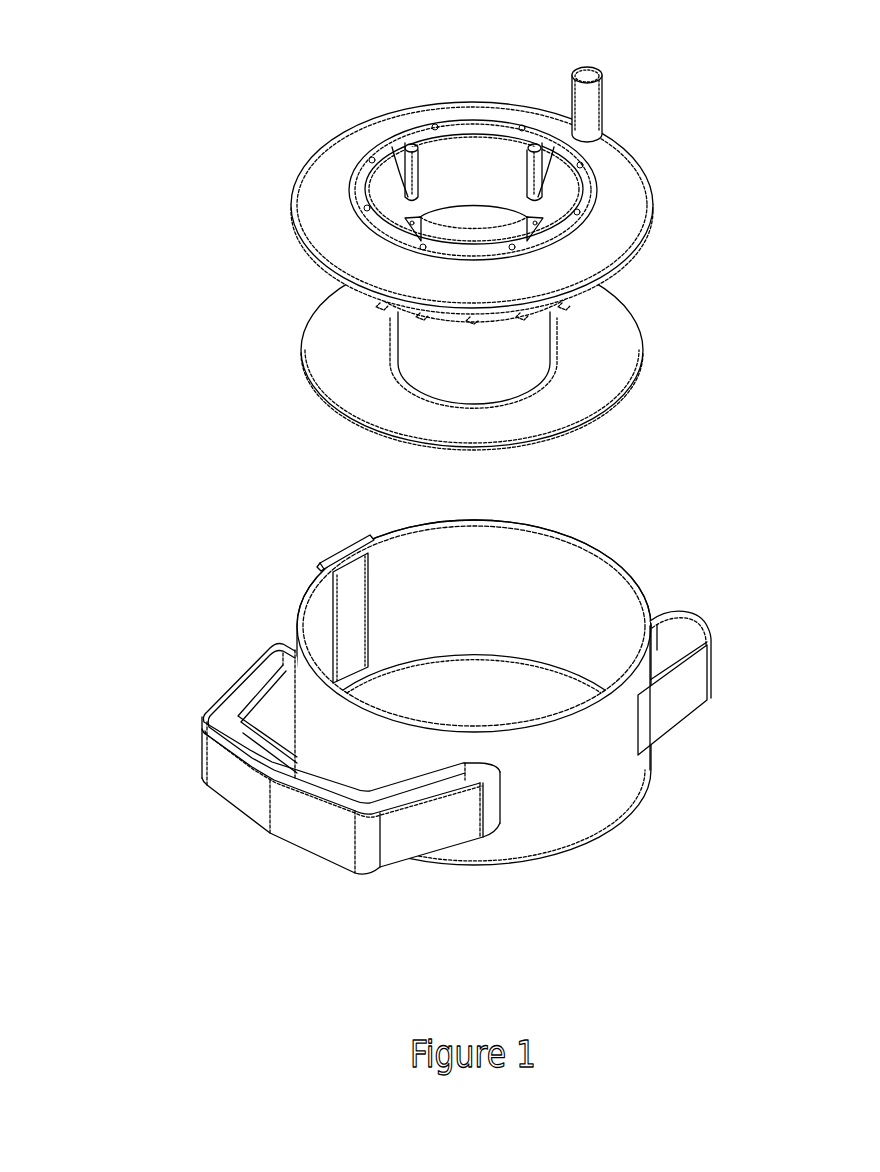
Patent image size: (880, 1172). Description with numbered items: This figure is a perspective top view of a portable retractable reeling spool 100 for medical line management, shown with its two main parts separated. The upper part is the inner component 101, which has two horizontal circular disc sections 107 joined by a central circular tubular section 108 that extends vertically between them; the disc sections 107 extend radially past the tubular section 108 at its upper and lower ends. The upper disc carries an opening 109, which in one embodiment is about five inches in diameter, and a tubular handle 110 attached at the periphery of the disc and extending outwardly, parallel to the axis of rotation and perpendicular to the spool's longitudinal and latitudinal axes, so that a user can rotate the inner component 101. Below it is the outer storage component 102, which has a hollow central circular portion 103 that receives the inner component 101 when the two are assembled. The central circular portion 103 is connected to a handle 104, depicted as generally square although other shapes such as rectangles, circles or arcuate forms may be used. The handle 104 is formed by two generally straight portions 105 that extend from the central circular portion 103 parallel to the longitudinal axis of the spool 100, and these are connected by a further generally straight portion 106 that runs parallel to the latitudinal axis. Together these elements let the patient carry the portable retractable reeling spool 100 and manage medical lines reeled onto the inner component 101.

The portable retractable reeling spool 100 is at (397, 468).
The inner component 101 is at (416, 239).
The outer storage component 102 is at (394, 693).
The hollow central circular portion 103 is at (557, 608).
The handle 104 is at (306, 760).
The portions 105 is at (240, 681).
The portion 106 is at (313, 853).
The circular disc sections 107 is at (656, 215).
The circular tubular section 108 is at (540, 351).
The opening 109 is at (462, 165).
The tubular handle 110 is at (604, 100).